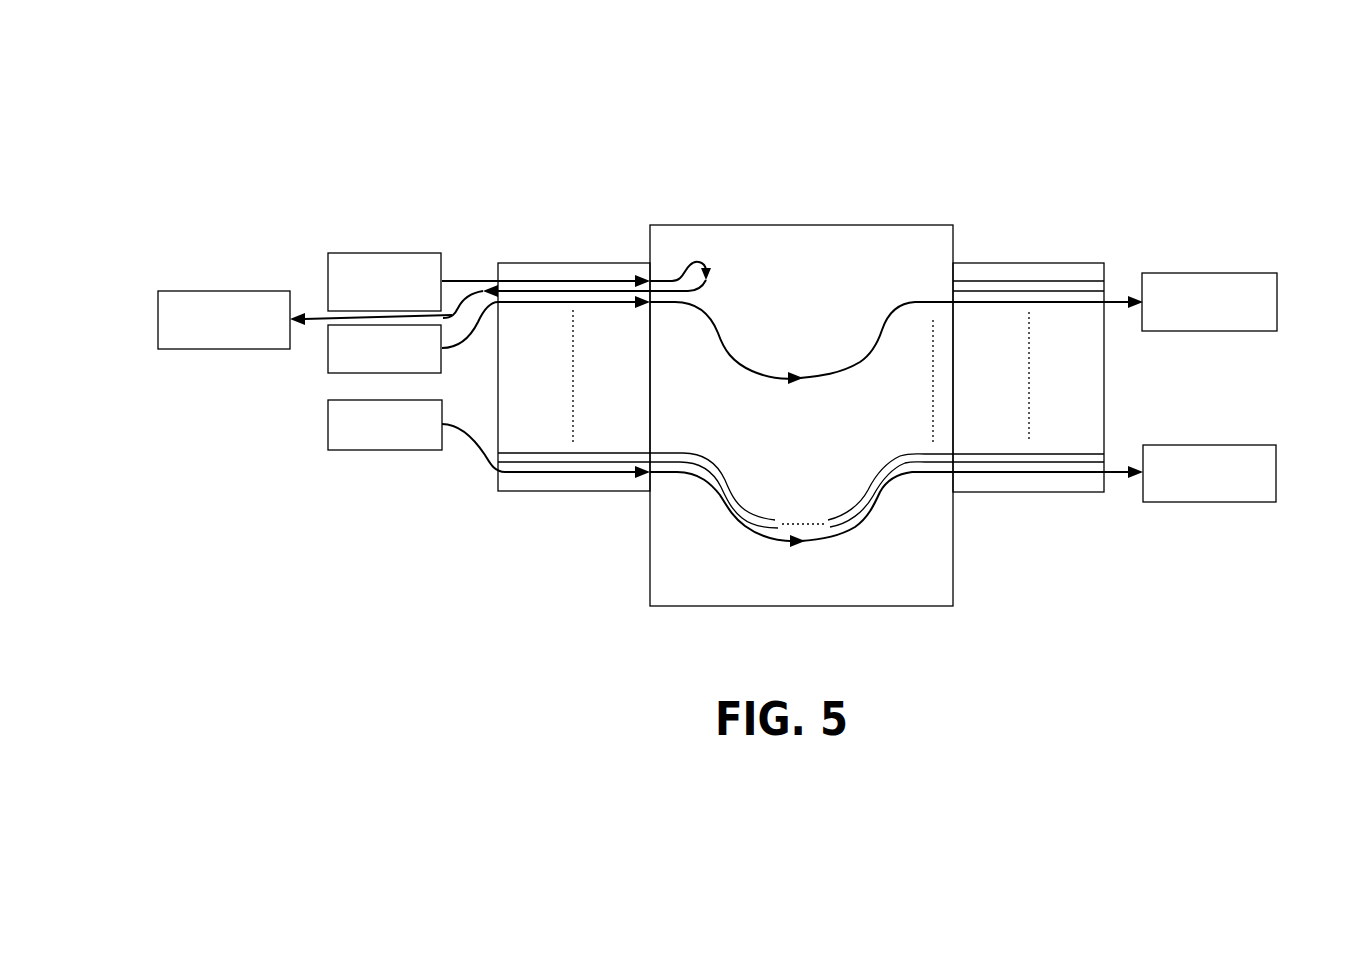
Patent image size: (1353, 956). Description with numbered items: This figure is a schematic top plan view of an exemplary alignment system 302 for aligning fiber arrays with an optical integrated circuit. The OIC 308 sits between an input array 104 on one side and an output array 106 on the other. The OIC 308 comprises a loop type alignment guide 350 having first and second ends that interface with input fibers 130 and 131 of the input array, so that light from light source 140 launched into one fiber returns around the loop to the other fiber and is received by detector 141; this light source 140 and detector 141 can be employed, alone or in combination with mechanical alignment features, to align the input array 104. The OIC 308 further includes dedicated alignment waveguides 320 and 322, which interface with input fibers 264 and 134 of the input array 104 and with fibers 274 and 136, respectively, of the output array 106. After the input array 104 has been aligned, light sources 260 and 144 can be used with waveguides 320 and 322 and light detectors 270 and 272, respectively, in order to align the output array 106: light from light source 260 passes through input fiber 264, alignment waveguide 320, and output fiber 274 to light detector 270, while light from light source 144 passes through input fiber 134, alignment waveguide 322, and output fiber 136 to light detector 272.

The alignment system 302 is at (447, 99).
The input array 104 is at (640, 263).
The output array 106 is at (968, 262).
The OIC 308 is at (880, 225).
The light source 140 is at (348, 253).
The detector 141 is at (198, 291).
The light source 260 is at (328, 340).
The light source 144 is at (328, 408).
The light detector 270 is at (1258, 273).
The light detector 272 is at (1258, 502).
The input fiber 130 is at (568, 292).
The input fiber 131 is at (570, 300).
The input fiber 264 is at (612, 302).
The loop type alignment guide 350 is at (718, 252).
The dedicated alignment waveguide 320 is at (845, 372).
The dedicated alignment waveguide 322 is at (770, 541).
The fiber 274 is at (1033, 304).
The input fiber 134 is at (525, 472).
The fiber 136 is at (972, 476).